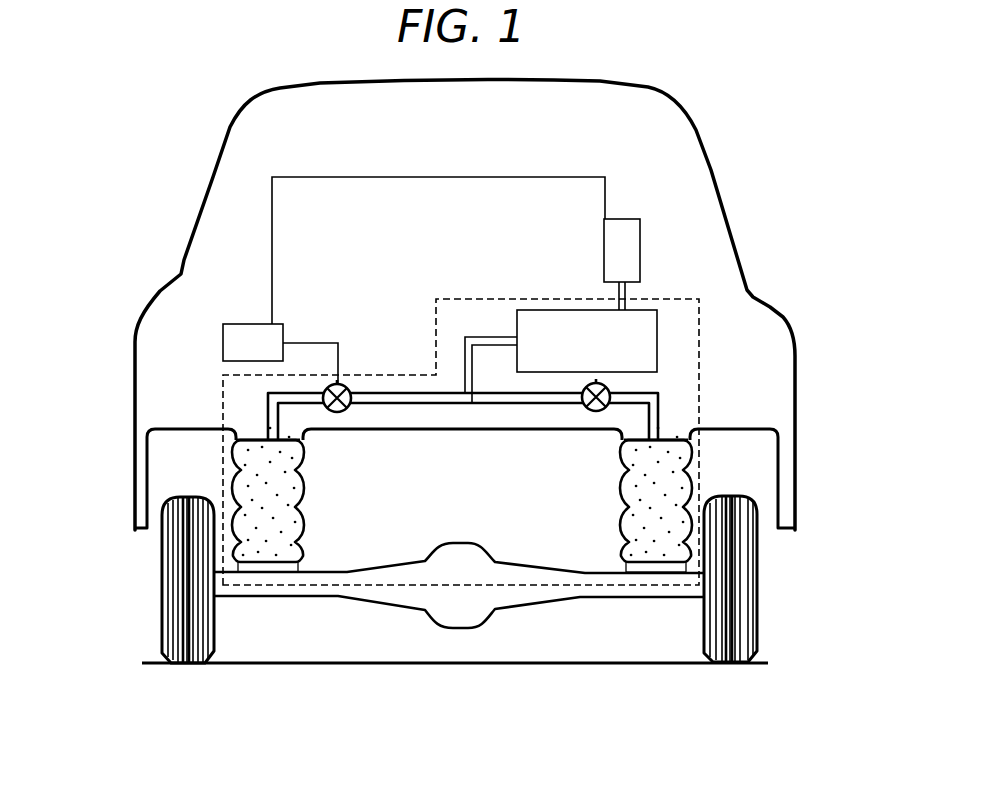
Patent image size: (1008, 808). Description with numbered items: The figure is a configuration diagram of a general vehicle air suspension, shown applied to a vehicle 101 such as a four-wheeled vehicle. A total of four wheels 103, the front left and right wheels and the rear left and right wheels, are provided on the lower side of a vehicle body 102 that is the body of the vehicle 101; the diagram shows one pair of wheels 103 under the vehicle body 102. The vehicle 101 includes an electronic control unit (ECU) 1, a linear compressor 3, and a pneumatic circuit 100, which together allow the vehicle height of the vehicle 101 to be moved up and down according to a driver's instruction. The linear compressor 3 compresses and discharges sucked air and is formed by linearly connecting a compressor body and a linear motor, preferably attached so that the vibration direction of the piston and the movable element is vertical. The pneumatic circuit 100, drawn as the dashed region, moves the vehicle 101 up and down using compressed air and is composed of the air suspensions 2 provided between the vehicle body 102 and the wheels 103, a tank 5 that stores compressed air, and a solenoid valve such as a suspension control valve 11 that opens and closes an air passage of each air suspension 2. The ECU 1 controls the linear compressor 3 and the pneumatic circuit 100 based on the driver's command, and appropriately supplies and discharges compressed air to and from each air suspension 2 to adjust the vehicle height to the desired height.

The vehicle 101 is at (779, 81).
The vehicle body 102 is at (772, 301).
The wheels 103 is at (162, 577).
The pneumatic circuit 100 is at (440, 298).
The electronic control unit (ECU) 1 is at (244, 322).
The air suspension 2 is at (228, 476).
The linear compressor 3 is at (629, 228).
The tank 5 is at (547, 310).
The suspension control valve 11 is at (338, 414).